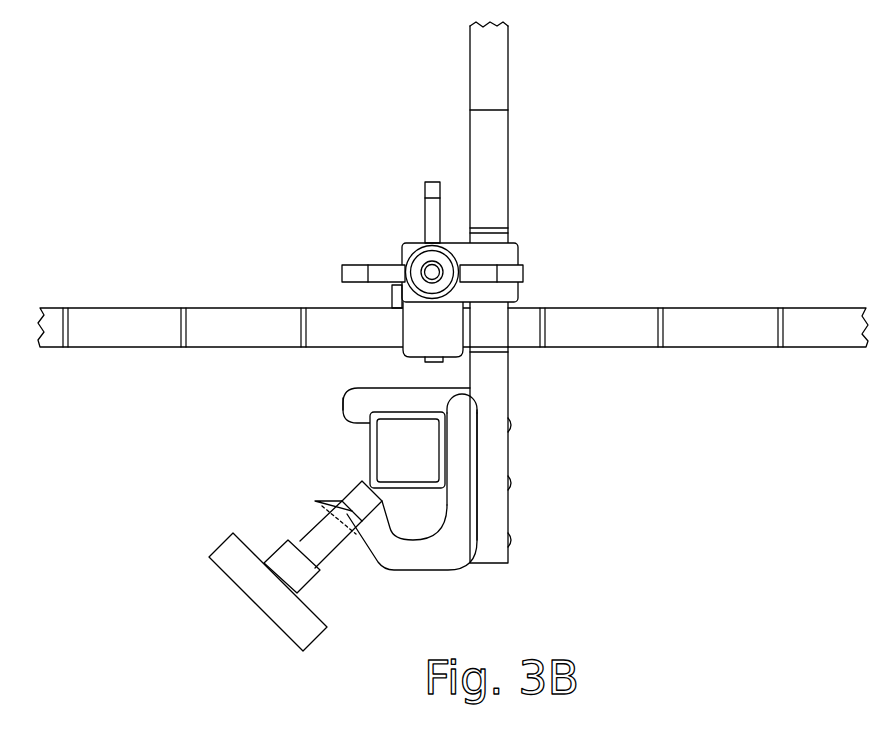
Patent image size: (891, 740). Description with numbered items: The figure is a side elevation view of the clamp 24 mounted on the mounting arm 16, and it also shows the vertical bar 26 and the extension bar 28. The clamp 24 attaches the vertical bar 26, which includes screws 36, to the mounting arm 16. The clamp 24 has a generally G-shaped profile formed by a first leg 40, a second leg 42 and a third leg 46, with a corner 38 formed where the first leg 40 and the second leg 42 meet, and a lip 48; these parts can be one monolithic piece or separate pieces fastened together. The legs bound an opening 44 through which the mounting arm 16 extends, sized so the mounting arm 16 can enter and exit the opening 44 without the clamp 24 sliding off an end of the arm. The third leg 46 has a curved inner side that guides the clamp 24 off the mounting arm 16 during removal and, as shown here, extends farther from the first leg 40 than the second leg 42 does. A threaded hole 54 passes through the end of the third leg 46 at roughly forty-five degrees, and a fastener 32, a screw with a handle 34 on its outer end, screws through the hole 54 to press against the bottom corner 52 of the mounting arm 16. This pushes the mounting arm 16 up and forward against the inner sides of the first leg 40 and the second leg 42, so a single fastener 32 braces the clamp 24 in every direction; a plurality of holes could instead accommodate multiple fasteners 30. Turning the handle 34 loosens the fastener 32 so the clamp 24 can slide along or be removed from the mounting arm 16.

The mounting arm 16 is at (370, 448).
The clamp 24 is at (384, 501).
The vertical bar 26 is at (487, 58).
The extension bar 28 is at (840, 322).
The fastener 30 is at (510, 255).
The fastener 32 is at (322, 540).
The handle 34 is at (275, 603).
The screws 36 is at (509, 425).
The corner 38 is at (458, 398).
The first leg 40 is at (460, 435).
The second leg 42 is at (397, 403).
The opening 44 is at (350, 465).
The third leg 46 is at (413, 563).
The lip 48 is at (360, 430).
The corner 52 is at (383, 480).
The hole 54 is at (315, 501).